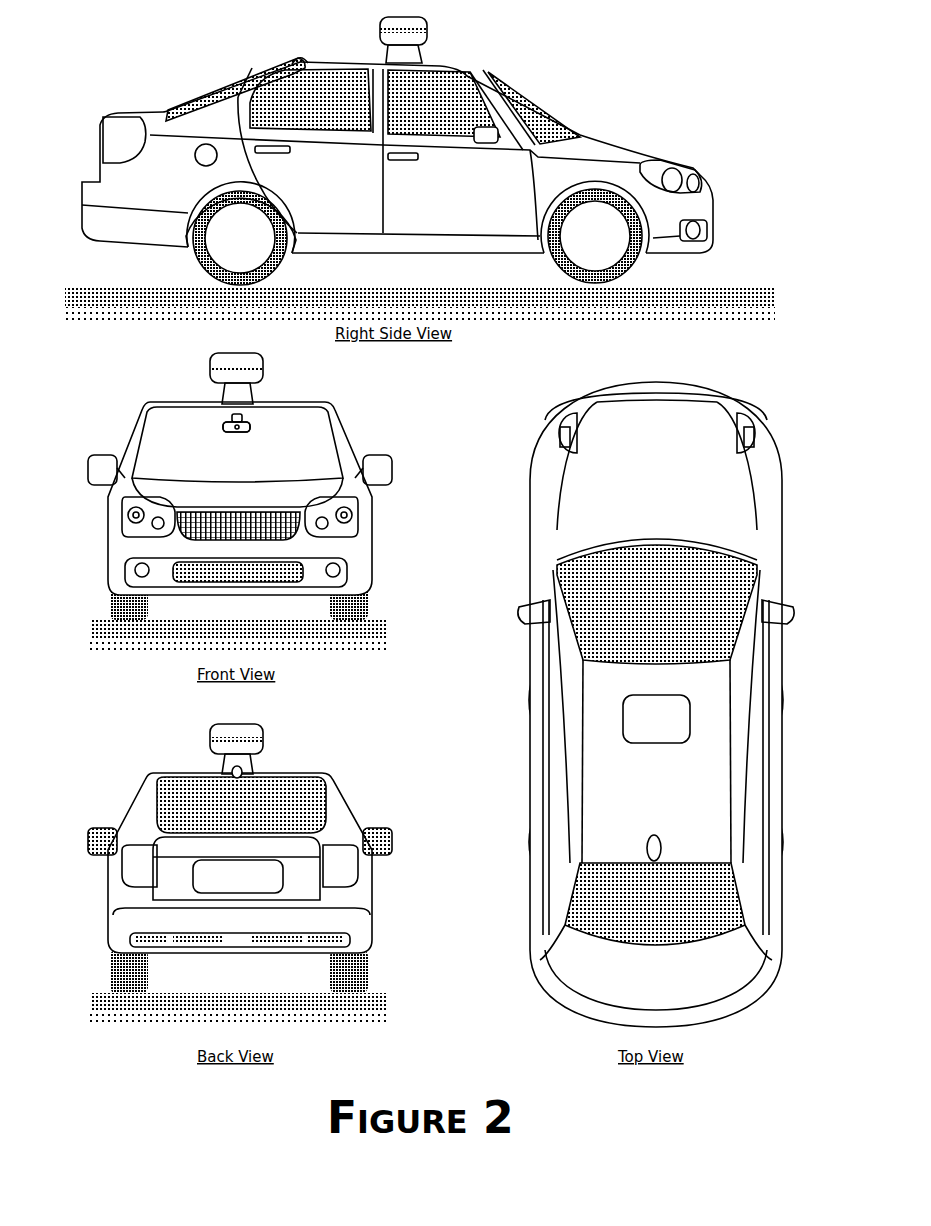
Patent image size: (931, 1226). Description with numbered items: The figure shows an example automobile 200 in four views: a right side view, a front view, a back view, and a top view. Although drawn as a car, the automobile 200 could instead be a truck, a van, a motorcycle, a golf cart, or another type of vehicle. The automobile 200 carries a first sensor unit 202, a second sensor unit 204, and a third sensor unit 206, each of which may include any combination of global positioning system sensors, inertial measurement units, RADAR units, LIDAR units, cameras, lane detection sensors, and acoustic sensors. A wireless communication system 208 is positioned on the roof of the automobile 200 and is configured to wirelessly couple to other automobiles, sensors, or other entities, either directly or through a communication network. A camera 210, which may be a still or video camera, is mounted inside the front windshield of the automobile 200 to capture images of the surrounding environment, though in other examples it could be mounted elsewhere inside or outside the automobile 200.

The automobile 200 is at (76, 103).
The first sensor unit 202 is at (428, 37).
The second sensor unit 204 is at (700, 184).
The third sensor unit 206 is at (708, 231).
The wireless communication system 208 is at (300, 58).
The camera 210 is at (252, 418).